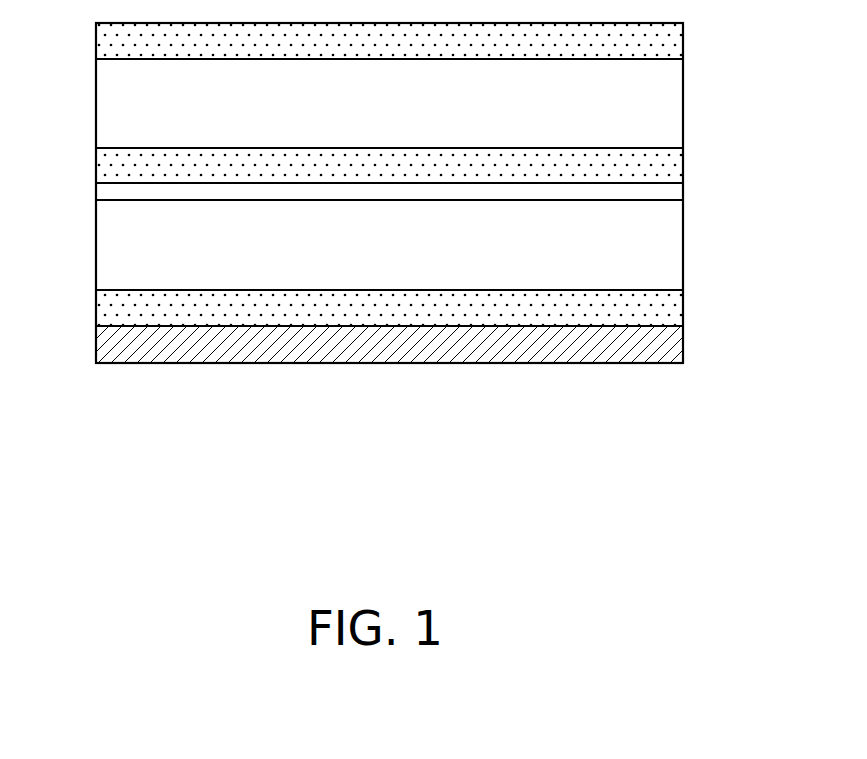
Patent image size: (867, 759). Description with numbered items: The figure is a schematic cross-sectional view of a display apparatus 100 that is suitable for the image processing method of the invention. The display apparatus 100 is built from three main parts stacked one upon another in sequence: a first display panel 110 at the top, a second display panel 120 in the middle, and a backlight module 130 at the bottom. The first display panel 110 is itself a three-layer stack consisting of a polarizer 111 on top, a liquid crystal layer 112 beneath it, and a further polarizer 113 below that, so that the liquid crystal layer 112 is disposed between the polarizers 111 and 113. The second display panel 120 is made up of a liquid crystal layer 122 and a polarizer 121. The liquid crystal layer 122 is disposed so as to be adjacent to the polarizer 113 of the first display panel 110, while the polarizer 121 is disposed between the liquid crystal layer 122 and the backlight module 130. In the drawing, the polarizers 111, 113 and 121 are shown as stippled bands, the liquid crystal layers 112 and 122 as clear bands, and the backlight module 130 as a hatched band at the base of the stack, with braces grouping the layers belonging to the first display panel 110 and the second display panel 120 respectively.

The display apparatus 100 is at (758, 536).
The first display panel 110 is at (387, 103).
The polarizer 111 is at (673, 47).
The liquid crystal layer 112 is at (673, 104).
The polarizer 113 is at (673, 169).
The second display panel 120 is at (388, 263).
The polarizer 121 is at (673, 307).
The liquid crystal layer 122 is at (673, 257).
The backlight module 130 is at (673, 353).